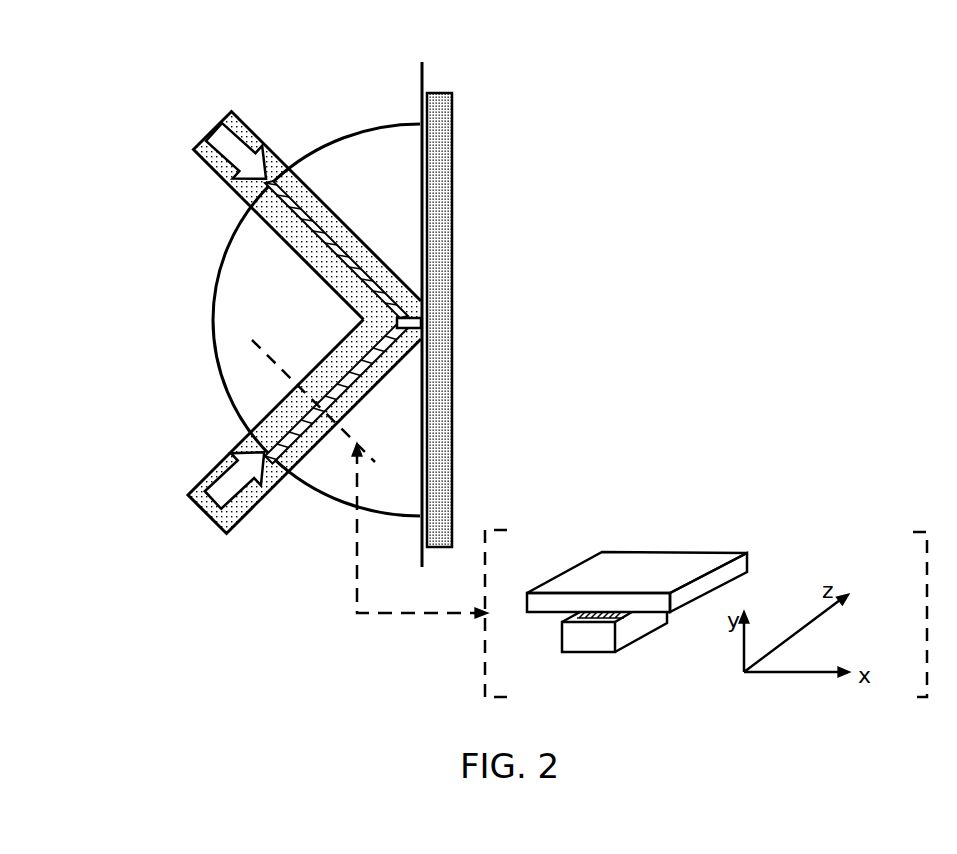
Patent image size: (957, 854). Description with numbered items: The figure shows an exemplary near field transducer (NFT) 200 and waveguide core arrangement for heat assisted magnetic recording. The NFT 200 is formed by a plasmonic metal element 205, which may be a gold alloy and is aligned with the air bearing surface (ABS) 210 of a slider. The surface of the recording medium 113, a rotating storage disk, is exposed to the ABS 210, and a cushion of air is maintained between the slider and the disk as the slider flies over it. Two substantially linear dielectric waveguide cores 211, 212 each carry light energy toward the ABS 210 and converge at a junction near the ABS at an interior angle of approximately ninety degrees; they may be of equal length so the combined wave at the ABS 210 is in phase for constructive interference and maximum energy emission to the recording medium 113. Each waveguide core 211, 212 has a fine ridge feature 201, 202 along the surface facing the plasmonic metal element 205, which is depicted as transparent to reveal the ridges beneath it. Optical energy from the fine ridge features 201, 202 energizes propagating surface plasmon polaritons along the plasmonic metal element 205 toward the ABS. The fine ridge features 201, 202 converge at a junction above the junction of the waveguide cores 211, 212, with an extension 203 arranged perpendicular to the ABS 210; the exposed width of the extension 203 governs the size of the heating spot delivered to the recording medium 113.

The near field transducer (NFT) 200 is at (751, 219).
The air bearing surface (ABS) 210 is at (423, 73).
The recording medium 113 is at (453, 275).
The plasmonic metal element 205 is at (213, 323).
The dielectric waveguide core 211 is at (207, 134).
The dielectric waveguide core 212 is at (210, 458).
The fine ridge feature 201 is at (285, 220).
The fine ridge feature 202 is at (304, 444).
The extension 203 is at (412, 305).